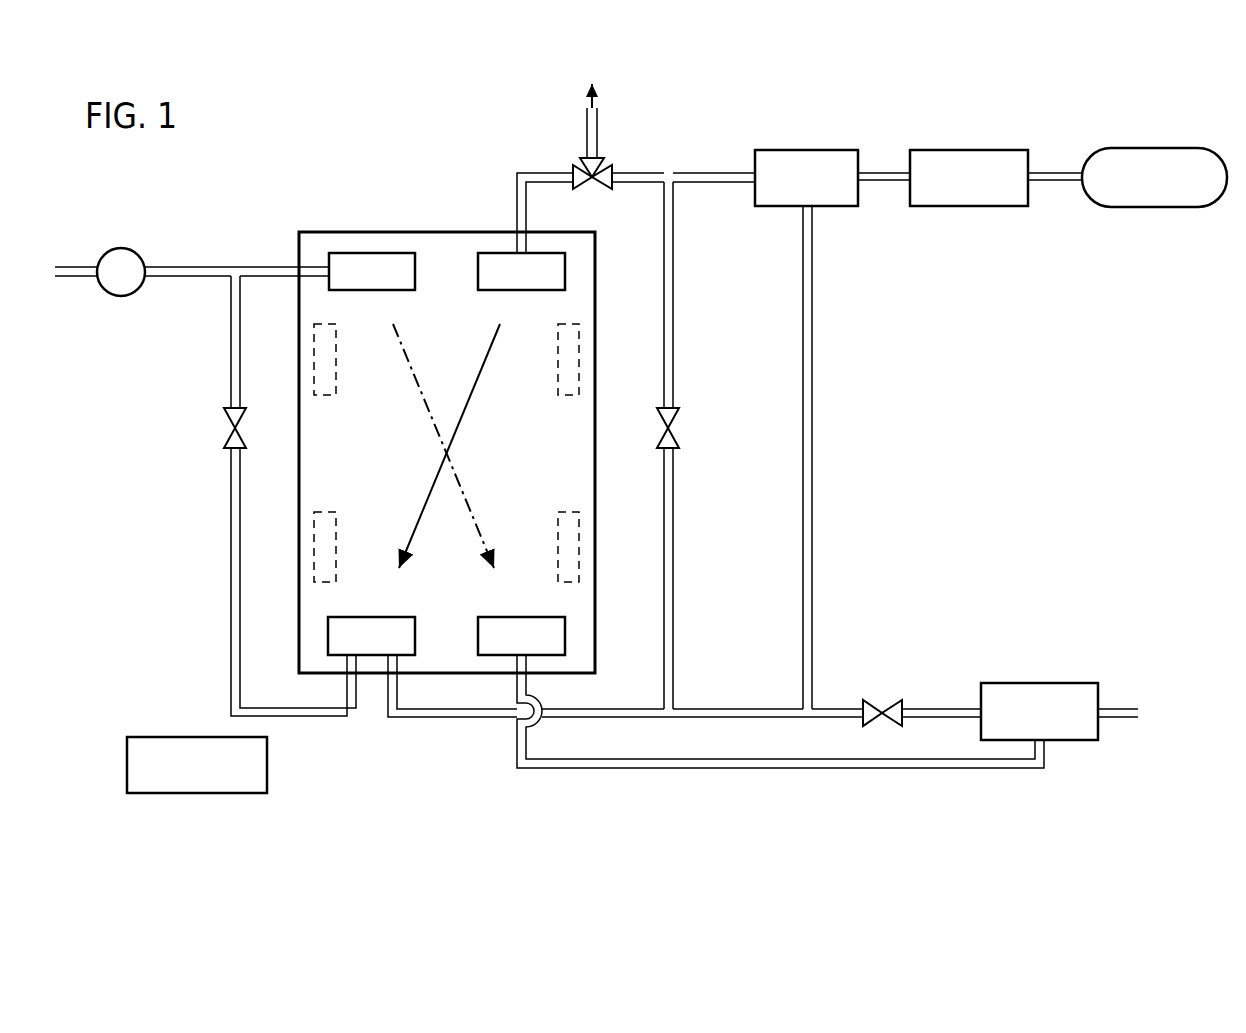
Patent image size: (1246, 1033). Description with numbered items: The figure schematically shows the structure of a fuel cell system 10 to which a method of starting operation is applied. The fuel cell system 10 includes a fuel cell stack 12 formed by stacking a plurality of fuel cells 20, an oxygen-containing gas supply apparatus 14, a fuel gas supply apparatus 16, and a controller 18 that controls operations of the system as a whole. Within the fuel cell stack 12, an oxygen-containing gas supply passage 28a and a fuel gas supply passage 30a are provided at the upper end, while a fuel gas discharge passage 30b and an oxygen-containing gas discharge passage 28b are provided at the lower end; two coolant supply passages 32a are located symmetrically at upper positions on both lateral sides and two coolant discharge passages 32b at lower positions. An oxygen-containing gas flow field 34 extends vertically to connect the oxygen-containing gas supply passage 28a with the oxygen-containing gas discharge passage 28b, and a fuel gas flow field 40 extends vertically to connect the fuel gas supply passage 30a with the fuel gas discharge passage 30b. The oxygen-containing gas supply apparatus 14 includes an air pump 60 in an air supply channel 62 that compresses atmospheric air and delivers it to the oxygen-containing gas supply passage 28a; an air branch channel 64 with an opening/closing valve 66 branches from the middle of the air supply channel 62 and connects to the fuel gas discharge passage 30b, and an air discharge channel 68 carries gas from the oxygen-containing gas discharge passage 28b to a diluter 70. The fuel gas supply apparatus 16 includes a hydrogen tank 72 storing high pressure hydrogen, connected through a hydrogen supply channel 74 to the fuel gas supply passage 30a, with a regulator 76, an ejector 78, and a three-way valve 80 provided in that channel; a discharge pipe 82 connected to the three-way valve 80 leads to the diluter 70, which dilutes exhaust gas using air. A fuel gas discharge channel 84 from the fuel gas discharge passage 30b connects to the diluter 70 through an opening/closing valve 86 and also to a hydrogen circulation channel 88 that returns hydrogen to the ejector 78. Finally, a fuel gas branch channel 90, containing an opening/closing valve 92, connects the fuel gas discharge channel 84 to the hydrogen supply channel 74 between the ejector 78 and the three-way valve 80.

The fuel cell system 10 is at (414, 137).
The fuel cell stack 12 is at (348, 224).
The fuel cell 20 is at (447, 452).
The oxygen-containing gas supply apparatus 14 is at (165, 238).
The fuel gas supply apparatus 16 is at (838, 130).
The controller 18 is at (158, 737).
The oxygen-containing gas supply passage 28a is at (366, 290).
The oxygen-containing gas discharge passage 28b is at (531, 617).
The fuel gas supply passage 30a is at (530, 290).
The fuel gas discharge passage 30b is at (360, 617).
The coolant supply passage 32a is at (338, 380).
The coolant discharge passage 32b is at (338, 530).
The oxygen-containing gas flow field 34 is at (408, 340).
The fuel gas flow field 40 is at (410, 545).
The air pump 60 is at (121, 297).
The air supply channel 62 is at (206, 266).
The air branch channel 64 is at (231, 338).
The opening/closing valve 66 is at (223, 436).
The air discharge channel 68 is at (619, 769).
The diluter 70 is at (1080, 683).
The hydrogen tank 72 is at (1126, 148).
The hydrogen supply channel 74 is at (885, 183).
The regulator 76 is at (924, 150).
The ejector 78 is at (768, 150).
The three-way valve 80 is at (604, 162).
The discharge pipe 82 is at (587, 118).
The fuel gas discharge channel 84 is at (585, 718).
The opening/closing valve 86 is at (894, 700).
The hydrogen circulation channel 88 is at (812, 548).
The fuel gas branch channel 90 is at (674, 548).
The opening/closing valve 92 is at (680, 424).